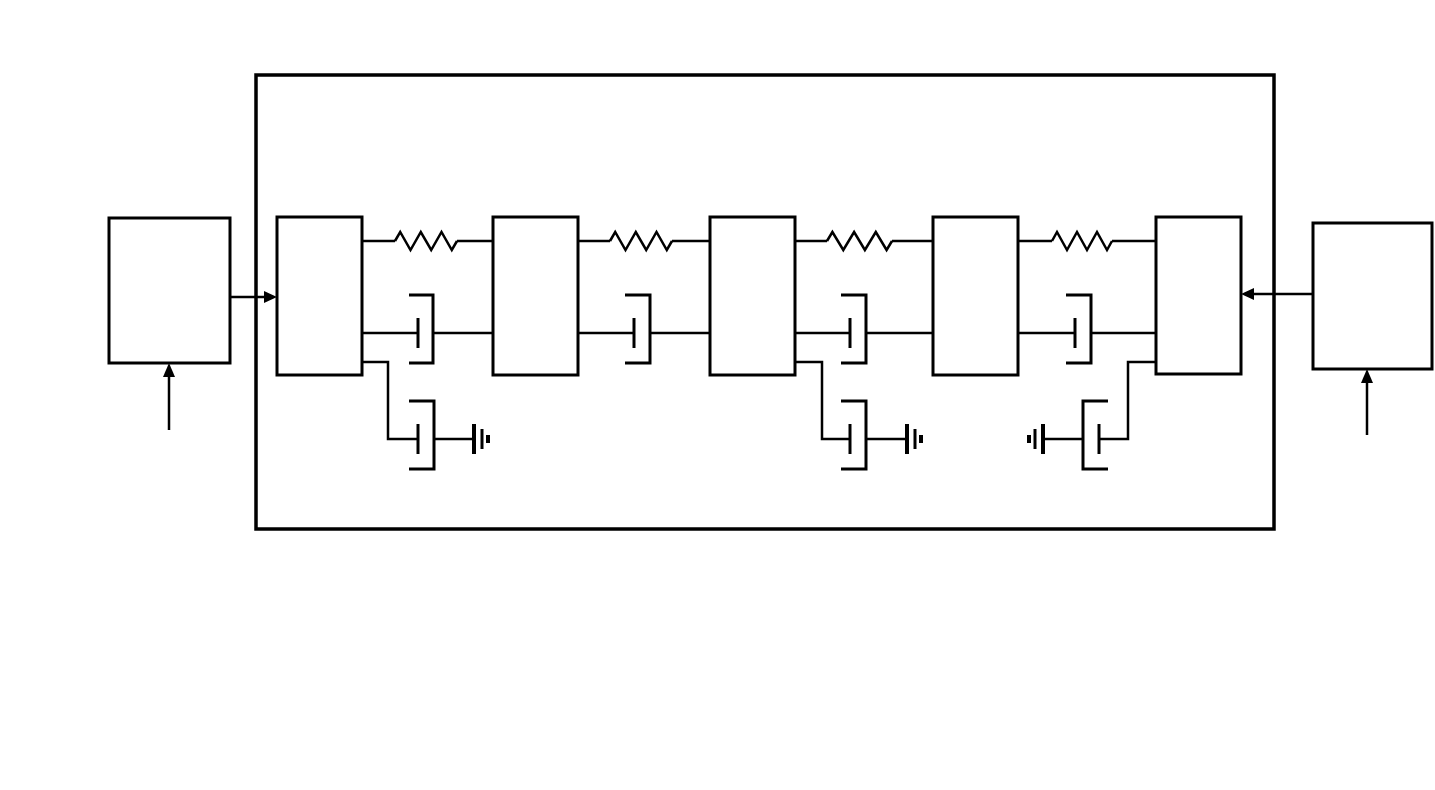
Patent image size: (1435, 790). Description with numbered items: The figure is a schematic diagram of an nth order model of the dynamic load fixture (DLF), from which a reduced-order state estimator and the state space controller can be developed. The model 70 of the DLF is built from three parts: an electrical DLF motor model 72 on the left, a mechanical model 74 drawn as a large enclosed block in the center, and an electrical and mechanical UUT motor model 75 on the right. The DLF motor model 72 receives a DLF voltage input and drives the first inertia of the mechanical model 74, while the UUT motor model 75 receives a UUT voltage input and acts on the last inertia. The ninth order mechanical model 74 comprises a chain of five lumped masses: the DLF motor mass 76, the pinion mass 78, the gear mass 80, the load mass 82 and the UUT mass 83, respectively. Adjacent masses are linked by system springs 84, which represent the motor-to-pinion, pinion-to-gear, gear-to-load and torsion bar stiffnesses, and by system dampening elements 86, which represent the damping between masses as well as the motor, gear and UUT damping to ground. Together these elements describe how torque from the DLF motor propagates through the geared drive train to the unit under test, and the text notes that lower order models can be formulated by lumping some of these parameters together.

The model of the DLF 70 is at (196, 91).
The electrical DLF motor model 72 is at (178, 217).
The mechanical model 74 is at (400, 97).
The electrical and mechanical UUT motor model 75 is at (1357, 220).
The DLF motor mass 76 is at (333, 217).
The pinion mass 78 is at (550, 217).
The gear mass 80 is at (766, 217).
The load mass 82 is at (975, 217).
The UUT mass 83 is at (1198, 213).
The system springs 84 is at (440, 232).
The system dampening elements 86 is at (637, 354).